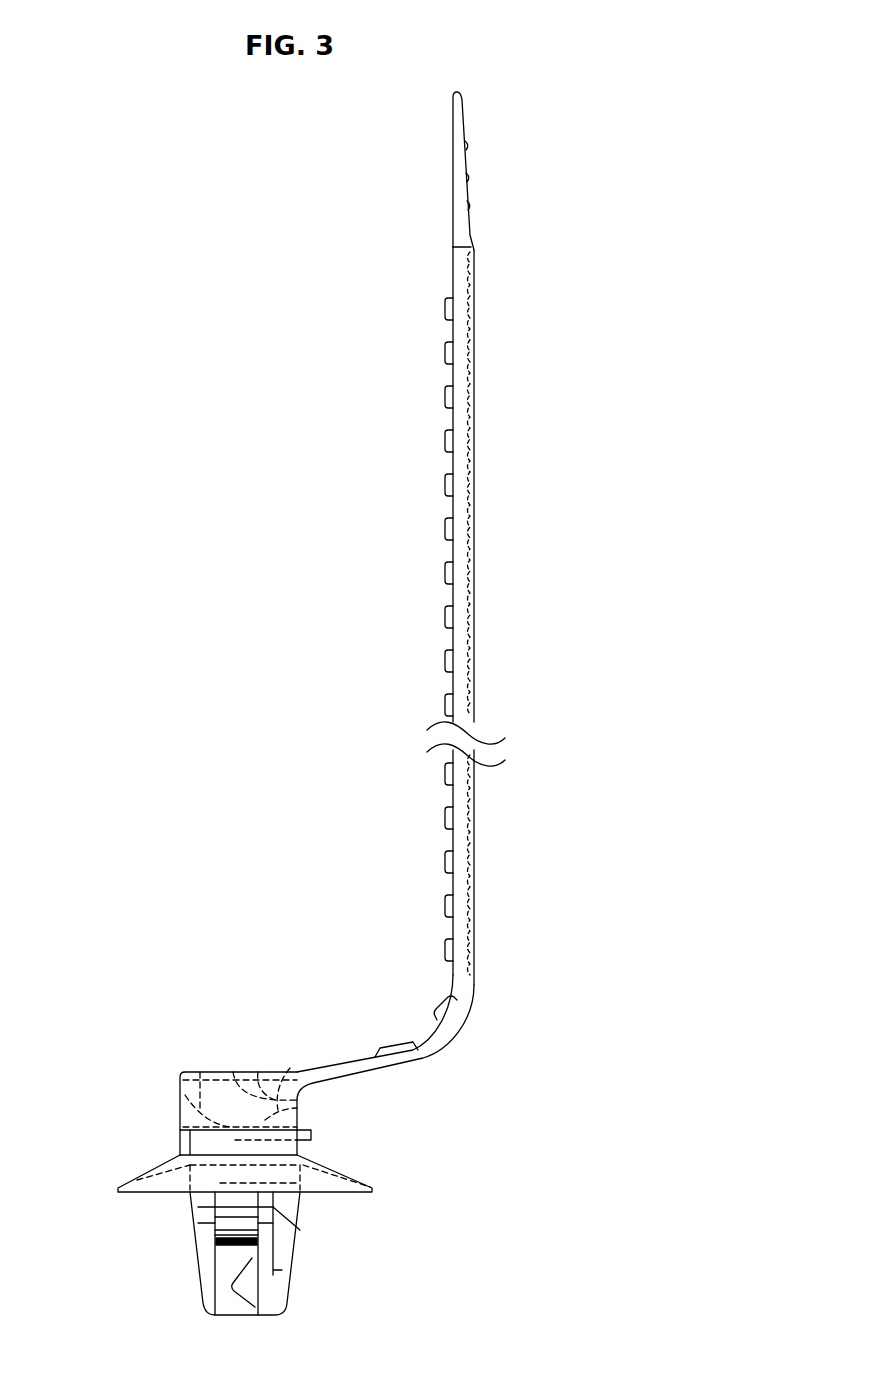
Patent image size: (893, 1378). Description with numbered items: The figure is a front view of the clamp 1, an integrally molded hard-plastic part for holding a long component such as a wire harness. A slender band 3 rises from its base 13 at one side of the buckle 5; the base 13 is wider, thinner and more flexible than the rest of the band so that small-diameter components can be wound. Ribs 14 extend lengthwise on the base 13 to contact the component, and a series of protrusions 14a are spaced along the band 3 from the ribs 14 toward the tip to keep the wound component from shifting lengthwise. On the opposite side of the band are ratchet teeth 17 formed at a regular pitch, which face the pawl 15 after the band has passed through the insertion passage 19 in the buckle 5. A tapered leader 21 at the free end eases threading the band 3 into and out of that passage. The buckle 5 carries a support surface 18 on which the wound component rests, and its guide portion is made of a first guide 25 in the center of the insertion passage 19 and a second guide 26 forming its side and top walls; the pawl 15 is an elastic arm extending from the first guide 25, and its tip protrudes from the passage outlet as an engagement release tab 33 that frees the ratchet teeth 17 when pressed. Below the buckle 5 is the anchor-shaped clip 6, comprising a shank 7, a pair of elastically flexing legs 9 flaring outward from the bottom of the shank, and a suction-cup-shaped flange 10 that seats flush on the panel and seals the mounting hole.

The clamp 1 is at (345, 658).
The slender band 3 is at (481, 509).
The buckle 5 is at (152, 1102).
The anchor-shaped clip 6 is at (312, 1292).
The shank 7 is at (200, 1212).
The legs 9 is at (232, 1258).
The flange 10 is at (150, 1170).
The base 13 is at (340, 1073).
The ribs 14 is at (395, 1045).
The protrusions 14a is at (446, 442).
The pawl 15 is at (300, 1113).
The ratchet teeth 17 is at (478, 615).
The support surface 18 is at (233, 1072).
The insertion passage 19 is at (258, 1072).
The tapered leader 21 is at (463, 162).
The first guide 25 is at (200, 1072).
The second guide 26 is at (290, 1068).
The engagement release tab 33 is at (303, 1150).